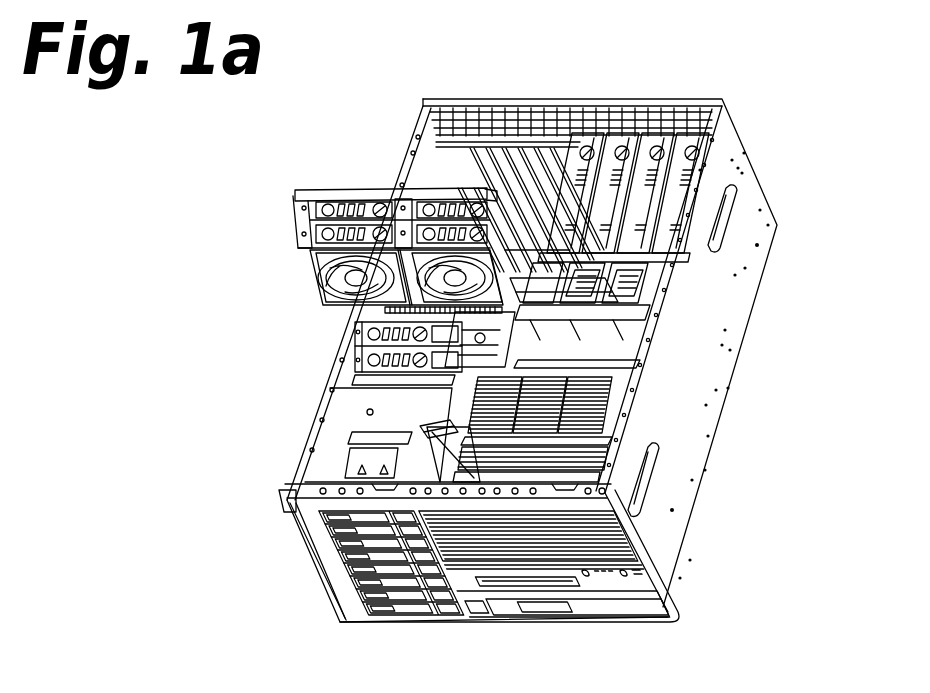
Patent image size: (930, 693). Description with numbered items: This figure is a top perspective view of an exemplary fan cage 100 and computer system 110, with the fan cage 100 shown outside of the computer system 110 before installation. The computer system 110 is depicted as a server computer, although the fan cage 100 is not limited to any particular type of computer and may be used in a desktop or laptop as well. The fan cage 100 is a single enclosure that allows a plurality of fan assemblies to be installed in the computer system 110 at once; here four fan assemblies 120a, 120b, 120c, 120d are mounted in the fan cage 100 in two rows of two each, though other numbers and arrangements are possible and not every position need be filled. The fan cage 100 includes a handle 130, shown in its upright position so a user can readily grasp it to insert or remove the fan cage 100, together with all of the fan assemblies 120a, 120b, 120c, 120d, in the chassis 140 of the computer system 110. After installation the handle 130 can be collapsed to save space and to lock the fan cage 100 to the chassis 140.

The fan cage 100 is at (350, 229).
The computer system 110 is at (752, 158).
The fan assembly 120a is at (331, 207).
The fan assembly 120b is at (313, 252).
The fan assembly 120c is at (423, 207).
The fan assembly 120d is at (428, 258).
The handle 130 is at (306, 190).
The chassis 140 is at (427, 428).